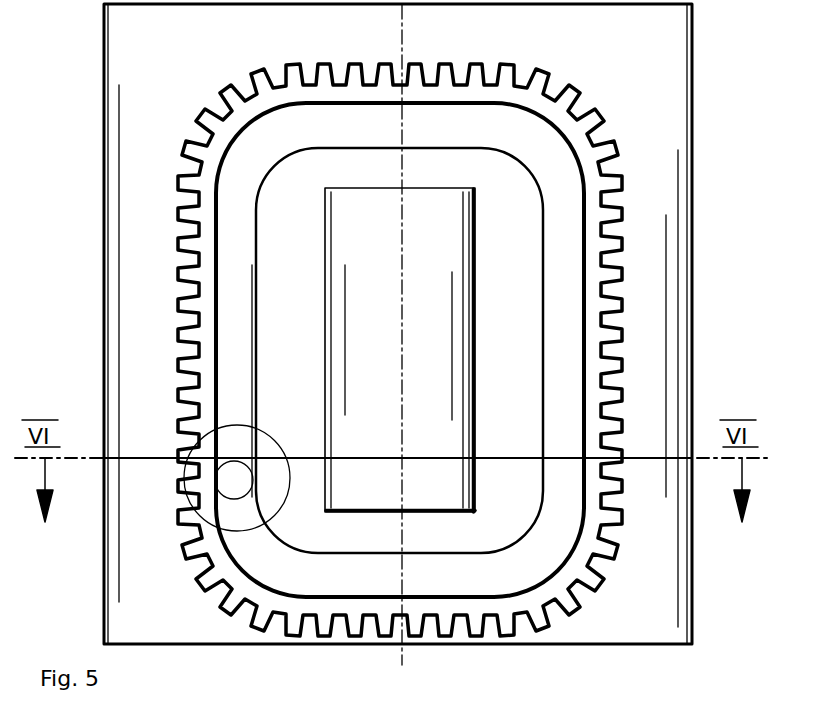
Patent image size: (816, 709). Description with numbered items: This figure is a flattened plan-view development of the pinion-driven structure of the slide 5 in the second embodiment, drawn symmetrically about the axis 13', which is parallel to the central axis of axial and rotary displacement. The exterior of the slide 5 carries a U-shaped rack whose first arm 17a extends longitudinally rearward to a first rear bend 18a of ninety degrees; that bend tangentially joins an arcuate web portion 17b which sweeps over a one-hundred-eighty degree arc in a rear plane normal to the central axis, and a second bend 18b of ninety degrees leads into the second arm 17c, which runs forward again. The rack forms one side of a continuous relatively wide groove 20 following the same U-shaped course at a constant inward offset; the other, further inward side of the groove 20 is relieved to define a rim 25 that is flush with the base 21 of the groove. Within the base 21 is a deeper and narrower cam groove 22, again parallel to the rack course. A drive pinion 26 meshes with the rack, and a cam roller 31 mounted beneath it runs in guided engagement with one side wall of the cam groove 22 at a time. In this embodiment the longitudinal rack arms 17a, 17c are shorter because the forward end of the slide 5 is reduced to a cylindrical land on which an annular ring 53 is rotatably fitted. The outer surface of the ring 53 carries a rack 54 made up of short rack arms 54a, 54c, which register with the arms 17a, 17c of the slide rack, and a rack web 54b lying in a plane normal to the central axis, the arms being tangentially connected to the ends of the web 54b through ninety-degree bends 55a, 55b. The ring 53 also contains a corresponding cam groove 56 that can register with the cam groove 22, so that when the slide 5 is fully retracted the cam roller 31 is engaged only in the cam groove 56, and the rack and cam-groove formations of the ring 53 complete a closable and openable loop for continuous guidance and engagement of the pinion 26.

The slide 5 is at (681, 73).
The axis 13' is at (429, 335).
The first arm 17a is at (180, 373).
The arcuate web portion 17b is at (443, 80).
The second arm 17c is at (612, 242).
The first rear bend 18a is at (222, 110).
The second bend 18b is at (540, 92).
The groove 20 is at (310, 97).
The base 21 is at (583, 152).
The cam groove 22 is at (428, 136).
The rim 25 is at (486, 331).
The drive pinion 26 is at (243, 547).
The cam roller 31 is at (190, 480).
The ring 53 is at (664, 617).
The rack 54 is at (411, 608).
The short rack arm 54a is at (174, 480).
The rack web 54b is at (388, 608).
The short rack arm 54c is at (607, 495).
The bend 55a is at (240, 598).
The bend 55b is at (580, 585).
The cam groove 56 is at (345, 572).